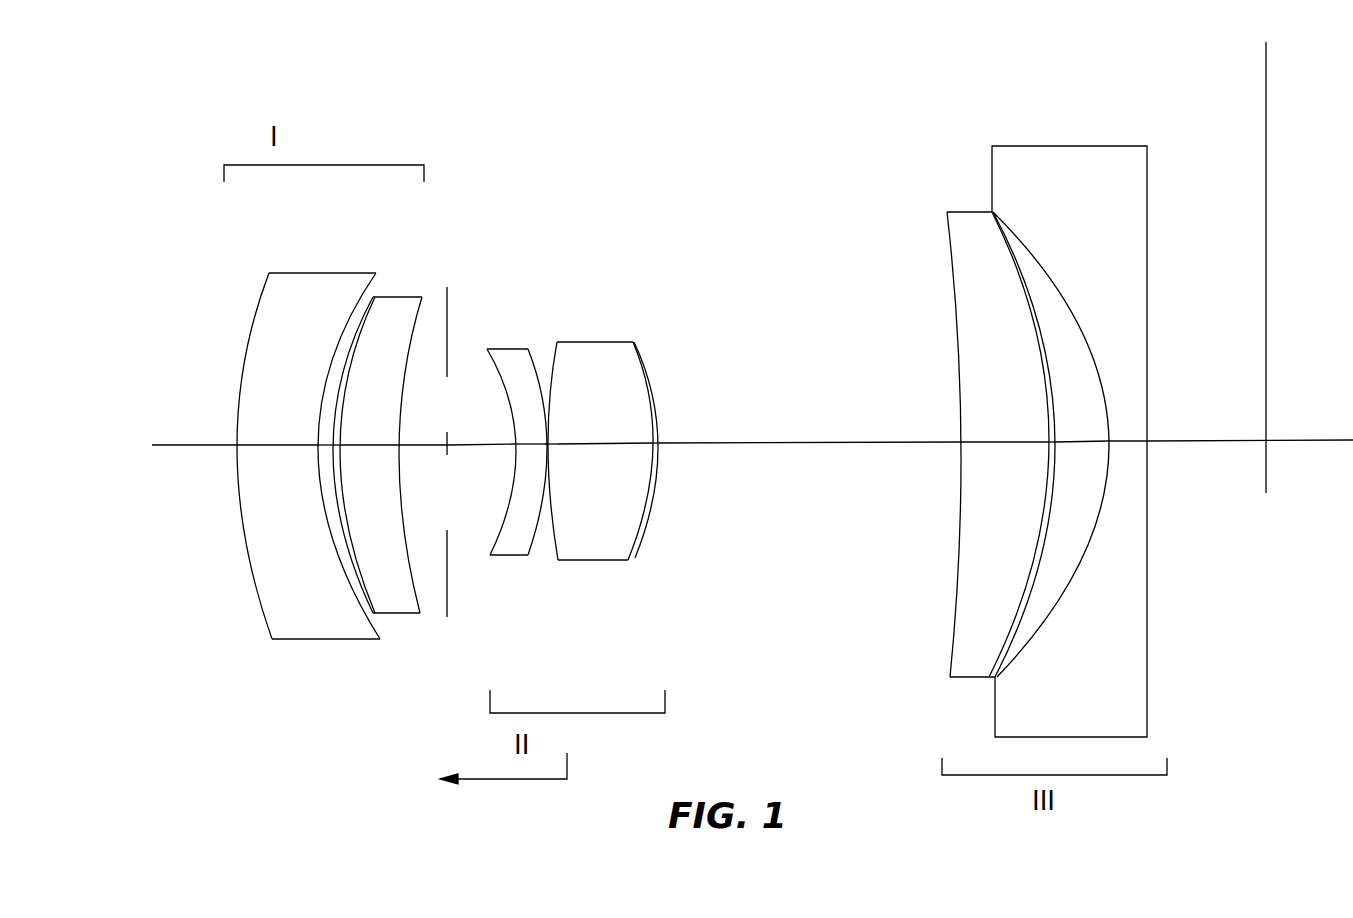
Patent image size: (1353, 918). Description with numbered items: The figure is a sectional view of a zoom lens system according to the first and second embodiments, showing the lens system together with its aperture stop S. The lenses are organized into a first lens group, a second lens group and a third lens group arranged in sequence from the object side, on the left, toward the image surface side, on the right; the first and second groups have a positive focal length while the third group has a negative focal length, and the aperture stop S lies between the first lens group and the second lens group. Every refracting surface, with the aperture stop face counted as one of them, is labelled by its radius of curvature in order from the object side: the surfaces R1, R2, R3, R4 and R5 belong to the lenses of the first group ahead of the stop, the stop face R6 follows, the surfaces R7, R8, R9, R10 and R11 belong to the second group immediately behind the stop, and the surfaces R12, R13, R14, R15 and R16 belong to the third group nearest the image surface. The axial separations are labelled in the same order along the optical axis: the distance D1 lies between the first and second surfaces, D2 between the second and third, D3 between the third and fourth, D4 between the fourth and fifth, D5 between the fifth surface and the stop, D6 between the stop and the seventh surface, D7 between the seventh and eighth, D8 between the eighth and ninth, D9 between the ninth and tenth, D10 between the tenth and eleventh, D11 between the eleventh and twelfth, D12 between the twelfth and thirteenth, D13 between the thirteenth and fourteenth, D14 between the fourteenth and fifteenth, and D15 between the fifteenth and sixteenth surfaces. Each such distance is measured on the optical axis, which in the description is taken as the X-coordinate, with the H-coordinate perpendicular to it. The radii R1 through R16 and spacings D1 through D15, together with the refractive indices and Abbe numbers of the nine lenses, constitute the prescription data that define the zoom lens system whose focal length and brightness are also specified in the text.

The radius of curvature of first lens surface R1 is at (262, 298).
The radius of curvature of second lens surface R2 is at (366, 293).
The radius of curvature of third lens surface R3 is at (373, 297).
The radius of curvature of fourth lens surface R4 is at (400, 297).
The radius of curvature of fifth lens surface R5 is at (420, 298).
The radius of curvature of sixth lens surface R6 is at (447, 290).
The radius of curvature of seventh lens surface R7 is at (487, 349).
The radius of curvature of eighth lens surface R8 is at (528, 349).
The radius of curvature of ninth lens surface R9 is at (557, 342).
The radius of curvature of tenth lens surface R10 is at (633, 342).
The radius of curvature of eleventh lens surface R11 is at (636, 342).
The radius of curvature of twelfth lens surface R12 is at (947, 238).
The radius of curvature of thirteenth lens surface R13 is at (978, 218).
The radius of curvature of fourteenth lens surface R14 is at (992, 210).
The radius of curvature of fifteenth lens surface R15 is at (1005, 217).
The radius of curvature of sixteenth lens surface R16 is at (1147, 160).
The distance between first and second lens surfaces D1 is at (277, 445).
The distance between second and third lens surfaces D2 is at (318, 445).
The distance between third and fourth lens surfaces D3 is at (326, 450).
The distance between fourth and fifth lens surfaces D4 is at (362, 444).
The distance between fifth and sixth lens surfaces D5 is at (418, 445).
The distance between sixth and seventh lens surfaces D6 is at (485, 445).
The distance between seventh and eighth lens surfaces D7 is at (546, 490).
The distance between eighth and ninth lens surfaces D8 is at (547, 495).
The distance between ninth and tenth lens surfaces D9 is at (605, 445).
The distance between tenth and eleventh lens surfaces D10 is at (658, 457).
The distance between eleventh and twelfth lens surfaces D11 is at (800, 447).
The distance between twelfth and thirteenth lens surfaces D12 is at (997, 442).
The distance between thirteenth and fourteenth lens surfaces D13 is at (1047, 443).
The distance between fourteenth and fifteenth lens surfaces D14 is at (1080, 442).
The distance between fifteenth and sixteenth lens surfaces D15 is at (1133, 443).
The aperture stop S is at (448, 612).